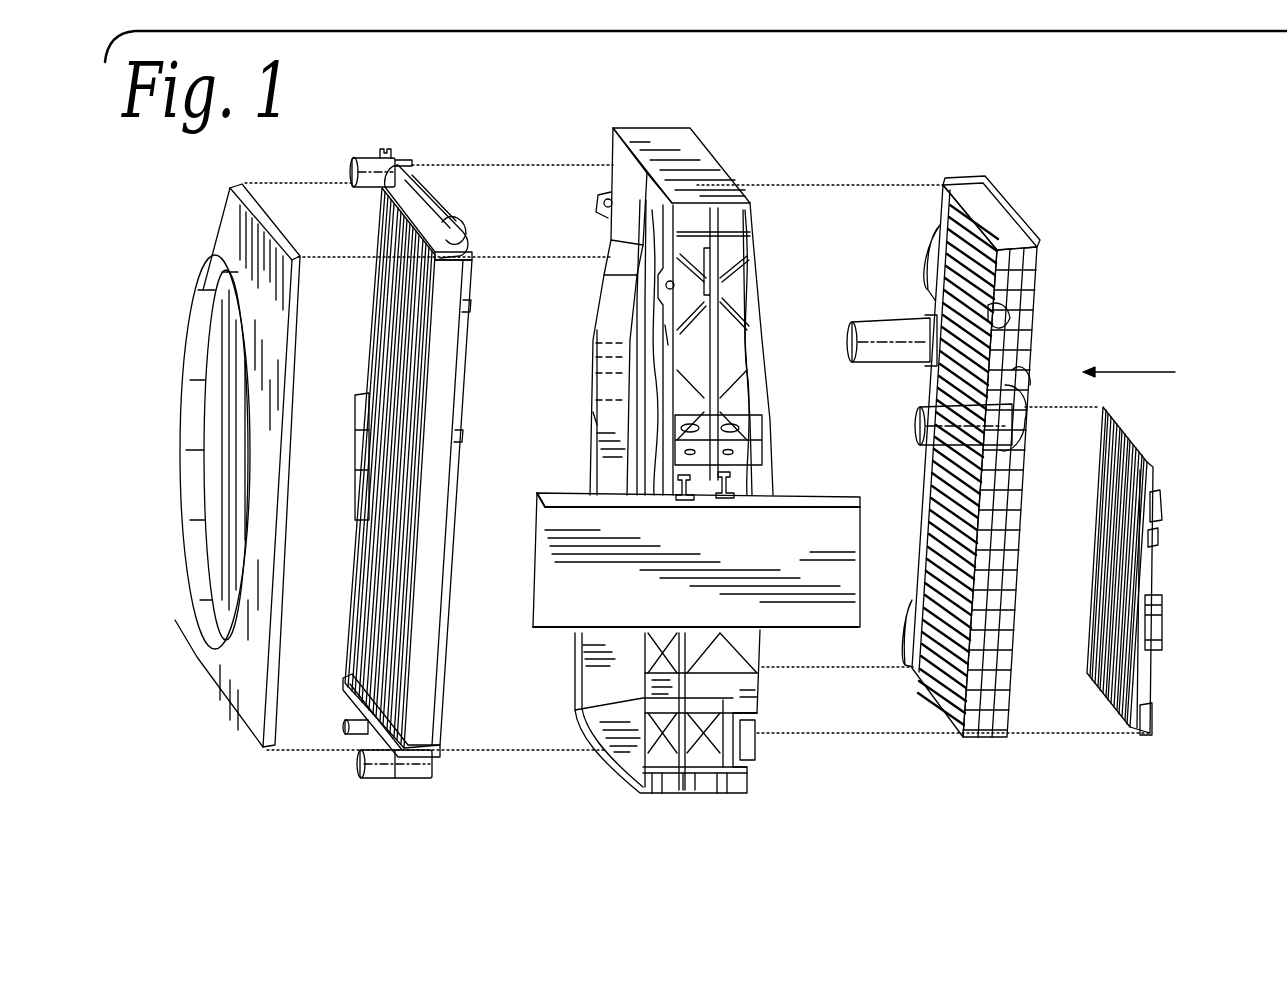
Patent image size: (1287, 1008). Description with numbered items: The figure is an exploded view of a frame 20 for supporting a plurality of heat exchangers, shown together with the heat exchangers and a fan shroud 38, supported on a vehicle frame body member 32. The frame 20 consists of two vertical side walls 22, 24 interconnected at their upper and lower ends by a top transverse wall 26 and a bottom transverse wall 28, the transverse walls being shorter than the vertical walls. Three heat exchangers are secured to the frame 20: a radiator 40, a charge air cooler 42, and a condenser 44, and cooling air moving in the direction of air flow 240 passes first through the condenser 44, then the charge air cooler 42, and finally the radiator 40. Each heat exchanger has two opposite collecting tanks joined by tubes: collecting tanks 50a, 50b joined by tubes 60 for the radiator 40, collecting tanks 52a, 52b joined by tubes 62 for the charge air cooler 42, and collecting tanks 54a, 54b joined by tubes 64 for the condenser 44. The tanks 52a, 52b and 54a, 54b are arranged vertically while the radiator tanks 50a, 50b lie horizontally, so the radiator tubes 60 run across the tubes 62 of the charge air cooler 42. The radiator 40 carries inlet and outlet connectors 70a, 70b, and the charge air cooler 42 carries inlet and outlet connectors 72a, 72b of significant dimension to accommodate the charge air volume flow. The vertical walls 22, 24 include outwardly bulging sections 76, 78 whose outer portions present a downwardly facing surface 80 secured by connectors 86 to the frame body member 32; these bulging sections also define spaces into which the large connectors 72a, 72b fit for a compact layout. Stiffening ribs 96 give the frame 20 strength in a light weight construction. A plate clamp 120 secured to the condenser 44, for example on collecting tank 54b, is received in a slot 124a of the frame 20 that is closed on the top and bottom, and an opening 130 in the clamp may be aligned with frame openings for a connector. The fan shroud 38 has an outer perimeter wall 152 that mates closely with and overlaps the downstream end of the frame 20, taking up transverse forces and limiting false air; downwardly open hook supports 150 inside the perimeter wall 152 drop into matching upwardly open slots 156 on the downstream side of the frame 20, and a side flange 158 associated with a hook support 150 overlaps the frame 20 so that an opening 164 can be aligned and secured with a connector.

The frame 20 is at (661, 457).
The vertical wall 22 is at (731, 282).
The vertical wall 24 is at (622, 227).
The top transverse wall 26 is at (677, 137).
The bottom transverse wall 28 is at (630, 763).
The frame body member 32 is at (818, 556).
The fan shroud 38 is at (237, 705).
The radiator 40 is at (385, 455).
The charge air cooler 42 is at (982, 405).
The condenser 44 is at (1147, 604).
The collecting tank 50a is at (428, 205).
The collecting tank 50b is at (373, 737).
The collecting tank 52a is at (932, 300).
The collecting tank 52b is at (1037, 295).
The collecting tank 54a is at (1091, 531).
The collecting tank 54b is at (1152, 567).
The tubes 60 is at (373, 565).
The tubes 62 is at (950, 480).
The tubes 64 is at (1110, 697).
The inlet connector 70a is at (365, 158).
The outlet connector 70b is at (377, 772).
The inlet connector 72a is at (875, 325).
The outlet connector 72b is at (915, 423).
The bulging section 76 is at (590, 341).
The bulging section 78 is at (666, 440).
The downwardly facing surface 80 is at (588, 357).
The connectors 86 is at (732, 494).
The stiffening ribs 96 is at (713, 742).
The plate clamp 120 is at (1158, 500).
The slot 124a is at (755, 723).
The opening 130 is at (1160, 517).
The downwardly open hook support 150 is at (928, 260).
The outer perimeter wall 152 is at (268, 222).
The upwardly open slot 156 is at (667, 333).
The side flange 158 is at (1003, 314).
The opening 164 is at (608, 198).
The direction of air flow 240 is at (1155, 372).